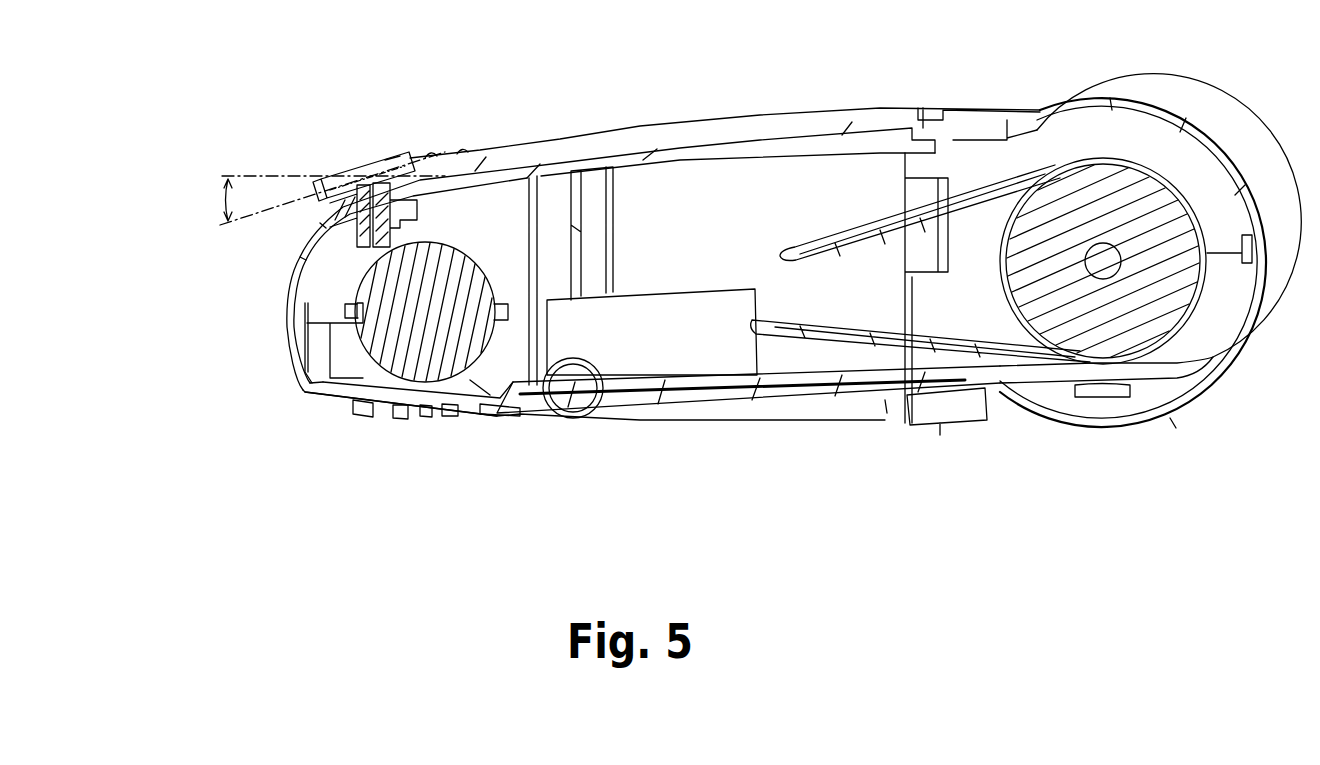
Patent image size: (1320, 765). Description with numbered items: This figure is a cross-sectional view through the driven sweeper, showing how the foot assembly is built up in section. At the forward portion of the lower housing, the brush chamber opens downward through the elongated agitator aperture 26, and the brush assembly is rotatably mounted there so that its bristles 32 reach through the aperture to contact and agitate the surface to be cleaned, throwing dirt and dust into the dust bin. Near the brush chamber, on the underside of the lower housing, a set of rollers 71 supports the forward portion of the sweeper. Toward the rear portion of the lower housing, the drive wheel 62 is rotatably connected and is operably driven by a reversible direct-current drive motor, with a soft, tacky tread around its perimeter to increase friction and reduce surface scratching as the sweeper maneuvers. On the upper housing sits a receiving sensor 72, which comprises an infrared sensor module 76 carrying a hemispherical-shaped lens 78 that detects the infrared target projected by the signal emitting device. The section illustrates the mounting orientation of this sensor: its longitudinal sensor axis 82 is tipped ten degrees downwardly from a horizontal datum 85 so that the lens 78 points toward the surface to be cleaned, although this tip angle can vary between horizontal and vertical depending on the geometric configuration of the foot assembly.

The agitator aperture 26 is at (343, 396).
The bristles 32 is at (392, 410).
The right drive wheel 62 is at (1088, 422).
The rollers 71 is at (576, 418).
The receiving sensor 72 is at (368, 163).
The infrared sensor module 76 is at (396, 150).
The lens 78 is at (318, 187).
The longitudinal sensor axis 82 is at (442, 150).
The horizontal datum 85 is at (230, 176).